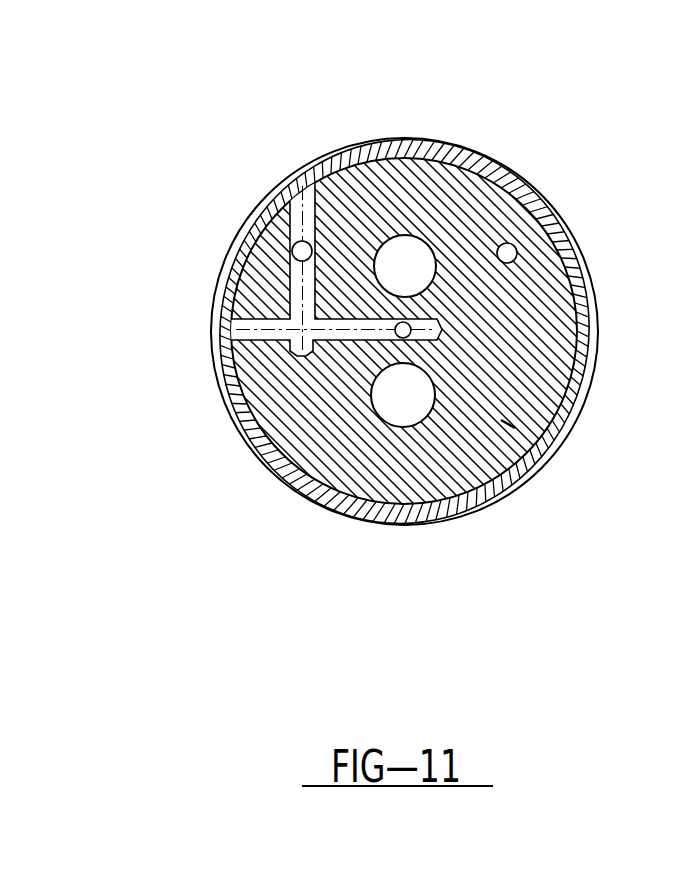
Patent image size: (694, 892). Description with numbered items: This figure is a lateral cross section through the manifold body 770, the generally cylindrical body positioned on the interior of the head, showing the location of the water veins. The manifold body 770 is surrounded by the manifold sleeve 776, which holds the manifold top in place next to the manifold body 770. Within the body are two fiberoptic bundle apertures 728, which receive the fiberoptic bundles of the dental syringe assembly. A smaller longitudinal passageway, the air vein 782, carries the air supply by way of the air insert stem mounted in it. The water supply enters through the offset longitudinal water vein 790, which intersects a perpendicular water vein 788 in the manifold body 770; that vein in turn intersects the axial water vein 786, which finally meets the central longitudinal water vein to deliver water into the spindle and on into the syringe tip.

The fiberoptic bundle apertures 728 is at (418, 247).
The manifold body 770 is at (543, 448).
The manifold sleeve 776 is at (473, 498).
The air vein 782 is at (509, 253).
The axial water vein 786 is at (243, 332).
The perpendicular water vein 788 is at (278, 190).
The offset longitudinal water vein 790 is at (304, 242).